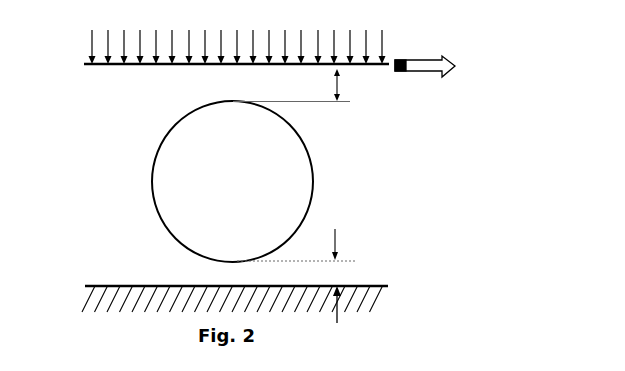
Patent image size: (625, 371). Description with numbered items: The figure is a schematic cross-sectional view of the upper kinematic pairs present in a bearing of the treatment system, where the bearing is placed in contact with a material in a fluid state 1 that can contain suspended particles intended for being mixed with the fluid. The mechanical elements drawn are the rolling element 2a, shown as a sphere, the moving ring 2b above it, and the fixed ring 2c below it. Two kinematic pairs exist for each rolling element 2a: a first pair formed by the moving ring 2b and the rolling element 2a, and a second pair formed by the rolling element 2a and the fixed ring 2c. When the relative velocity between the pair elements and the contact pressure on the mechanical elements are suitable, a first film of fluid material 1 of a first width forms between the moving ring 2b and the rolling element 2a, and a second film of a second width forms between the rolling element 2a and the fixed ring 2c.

The material in a fluid state 1 is at (263, 163).
The rolling element 2a is at (323, 187).
The moving ring 2b is at (115, 74).
The fixed ring 2c is at (109, 279).